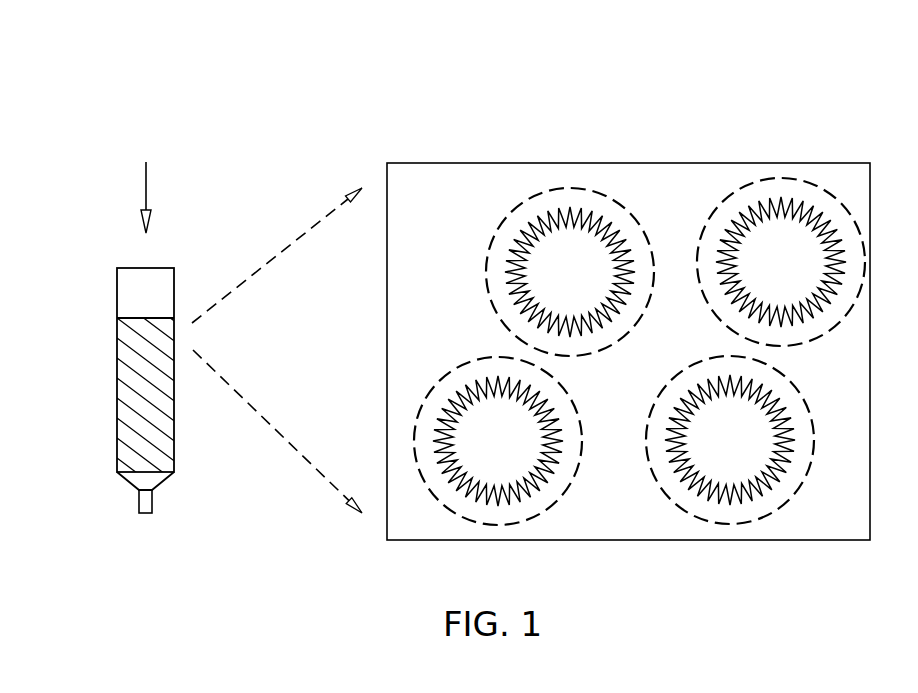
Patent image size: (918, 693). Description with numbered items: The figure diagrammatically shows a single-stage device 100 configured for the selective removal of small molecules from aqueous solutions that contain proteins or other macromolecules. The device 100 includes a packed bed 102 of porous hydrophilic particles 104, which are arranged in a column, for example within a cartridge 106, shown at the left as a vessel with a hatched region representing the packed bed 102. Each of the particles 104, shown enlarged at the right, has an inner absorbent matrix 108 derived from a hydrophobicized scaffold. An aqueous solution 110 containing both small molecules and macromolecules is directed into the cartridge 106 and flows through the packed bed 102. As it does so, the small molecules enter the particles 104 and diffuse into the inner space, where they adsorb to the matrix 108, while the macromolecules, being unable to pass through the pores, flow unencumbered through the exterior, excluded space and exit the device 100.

The device 100 is at (267, 138).
The packed bed 102 is at (127, 387).
The porous hydrophilic particles 104 is at (738, 190).
The cartridge 106 is at (175, 450).
The inner absorbent matrix 108 is at (565, 233).
The aqueous solution 110 is at (140, 188).